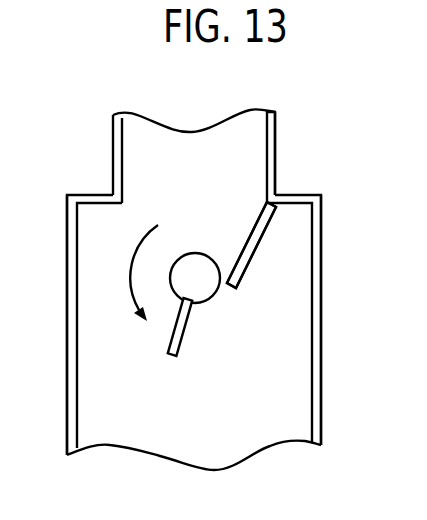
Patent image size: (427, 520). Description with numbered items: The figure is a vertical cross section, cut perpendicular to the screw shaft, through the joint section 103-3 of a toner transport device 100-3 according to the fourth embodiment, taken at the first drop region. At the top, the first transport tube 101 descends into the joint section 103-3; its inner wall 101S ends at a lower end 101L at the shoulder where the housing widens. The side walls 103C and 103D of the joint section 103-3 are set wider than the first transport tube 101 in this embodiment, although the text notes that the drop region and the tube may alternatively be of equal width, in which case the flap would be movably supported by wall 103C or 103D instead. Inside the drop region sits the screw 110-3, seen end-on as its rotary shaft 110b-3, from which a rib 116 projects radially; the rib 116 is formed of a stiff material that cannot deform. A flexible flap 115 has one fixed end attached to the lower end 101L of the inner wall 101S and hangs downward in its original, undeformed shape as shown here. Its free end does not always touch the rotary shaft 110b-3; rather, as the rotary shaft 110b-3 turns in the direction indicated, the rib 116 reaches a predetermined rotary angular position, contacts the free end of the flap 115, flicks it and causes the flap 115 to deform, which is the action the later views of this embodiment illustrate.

The toner transport device 100-3 is at (210, 255).
The first transport tube 101 is at (275, 120).
The inner wall 101S is at (275, 137).
The lower end 101L is at (267, 196).
The joint section 103-3 is at (330, 267).
The side wall 103C is at (67, 382).
The side wall 103D is at (322, 382).
The screw 110-3 is at (173, 288).
The rotary shaft 110b-3 is at (215, 238).
The flap 115 is at (257, 244).
The rib 116 is at (187, 336).